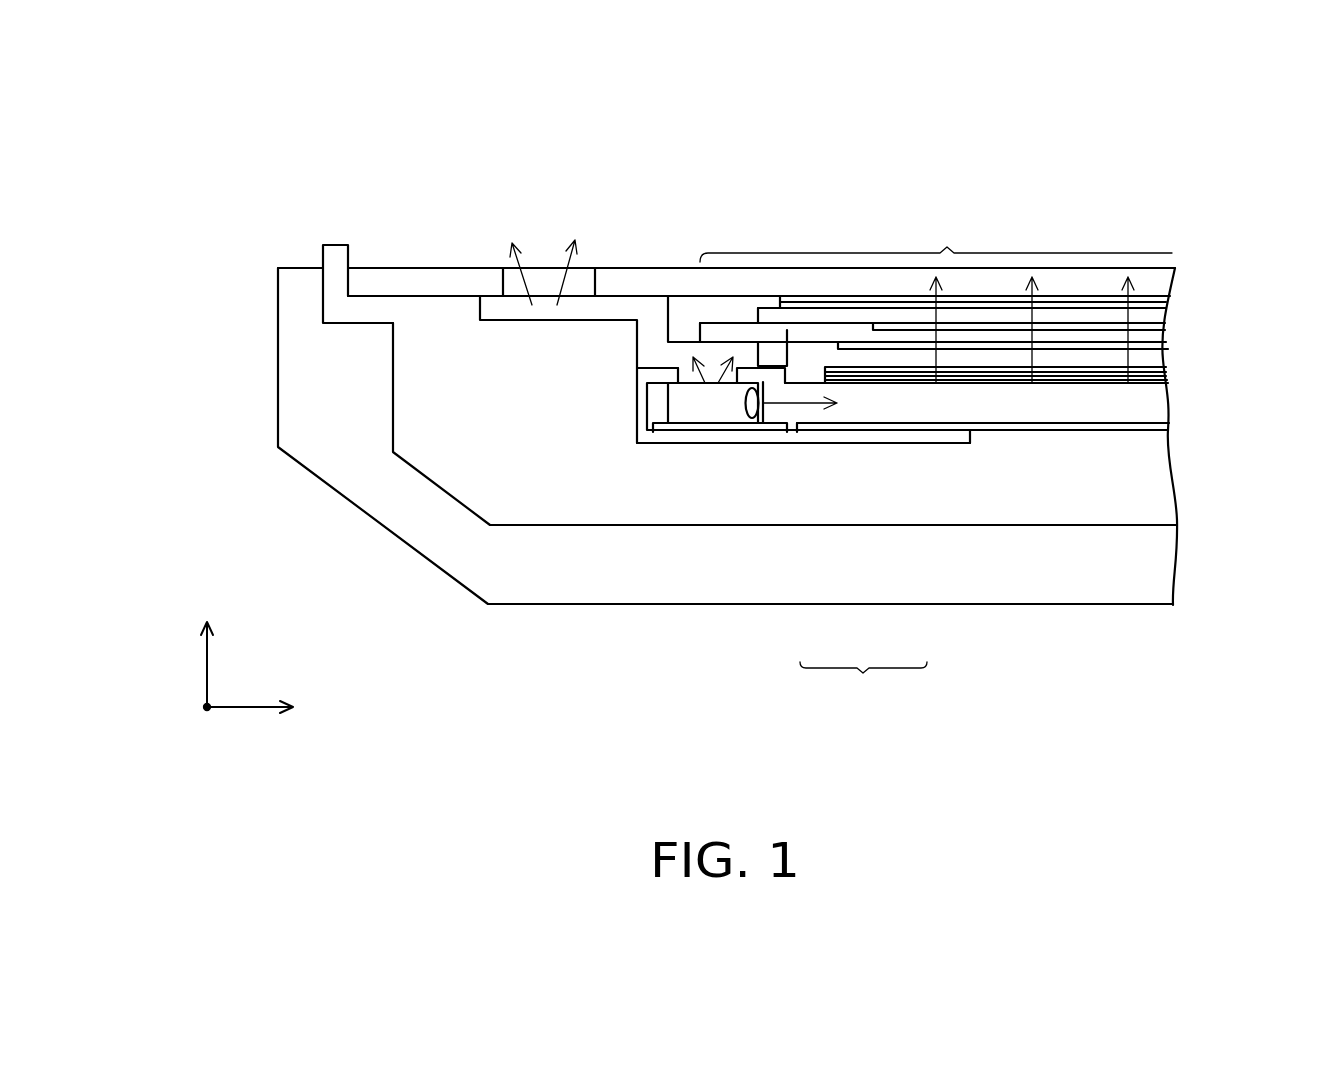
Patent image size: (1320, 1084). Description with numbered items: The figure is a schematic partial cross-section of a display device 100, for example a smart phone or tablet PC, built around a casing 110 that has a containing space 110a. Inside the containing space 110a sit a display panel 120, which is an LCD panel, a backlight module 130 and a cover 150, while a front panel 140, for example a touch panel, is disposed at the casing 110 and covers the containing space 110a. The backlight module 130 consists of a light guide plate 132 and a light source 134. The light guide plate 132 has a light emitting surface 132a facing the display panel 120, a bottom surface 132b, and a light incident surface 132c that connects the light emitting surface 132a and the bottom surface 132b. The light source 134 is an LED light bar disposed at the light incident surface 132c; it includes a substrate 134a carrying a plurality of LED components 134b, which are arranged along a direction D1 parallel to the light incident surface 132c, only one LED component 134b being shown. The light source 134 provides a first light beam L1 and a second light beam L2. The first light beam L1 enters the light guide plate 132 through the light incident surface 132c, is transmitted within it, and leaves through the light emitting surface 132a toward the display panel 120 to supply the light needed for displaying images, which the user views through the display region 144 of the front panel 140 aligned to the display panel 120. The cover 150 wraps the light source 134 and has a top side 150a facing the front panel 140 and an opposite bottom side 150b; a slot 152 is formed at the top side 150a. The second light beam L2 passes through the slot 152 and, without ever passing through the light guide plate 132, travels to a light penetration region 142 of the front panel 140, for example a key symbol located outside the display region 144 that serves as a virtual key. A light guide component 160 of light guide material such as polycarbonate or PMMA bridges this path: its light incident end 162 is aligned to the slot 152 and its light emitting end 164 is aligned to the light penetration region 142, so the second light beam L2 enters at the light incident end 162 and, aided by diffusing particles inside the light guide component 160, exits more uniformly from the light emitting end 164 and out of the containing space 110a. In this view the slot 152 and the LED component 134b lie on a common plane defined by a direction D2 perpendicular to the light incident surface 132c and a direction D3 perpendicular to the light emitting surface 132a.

The display device 100 is at (1290, 651).
The casing 110 is at (315, 400).
The containing space 110a is at (445, 358).
The display panel 120 is at (817, 330).
The backlight module 130 is at (871, 457).
The light guide plate 132 is at (970, 435).
The light emitting surface 132a is at (1144, 371).
The bottom surface 132b is at (1037, 428).
The light incident surface 132c is at (781, 398).
The light source 134 is at (658, 520).
The substrate 134a is at (690, 423).
The LED component 134b is at (667, 403).
The front panel 140 is at (1072, 280).
The light penetration region 142 is at (547, 278).
The display region 144 is at (947, 248).
The cover 150 is at (763, 510).
The top side 150a is at (656, 355).
The bottom side 150b is at (655, 445).
The slot 152 is at (755, 366).
The light guide component 160 is at (637, 328).
The light incident end 162 is at (712, 371).
The light emitting end 164 is at (513, 292).
The first light beam L1 is at (805, 403).
The second light beam L2 is at (683, 363).
The direction D1 is at (205, 710).
The direction D2 is at (255, 708).
The direction D3 is at (207, 652).